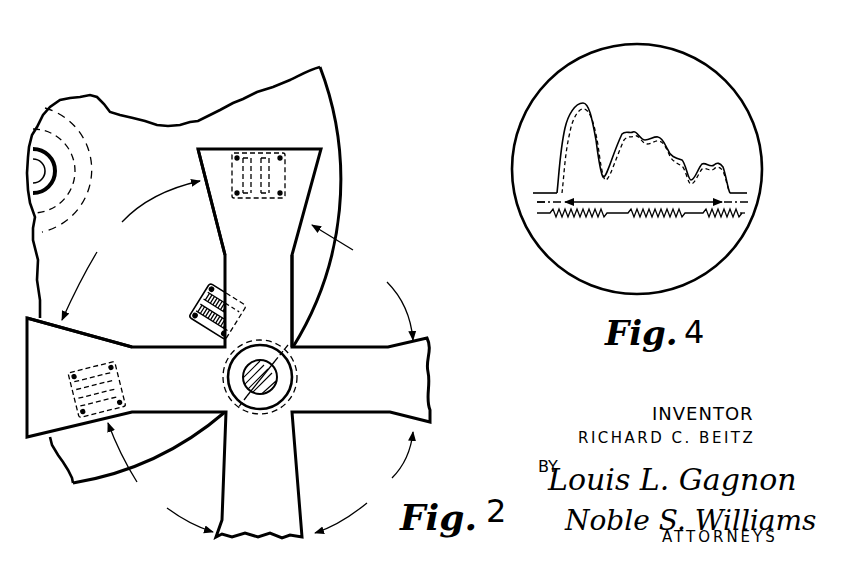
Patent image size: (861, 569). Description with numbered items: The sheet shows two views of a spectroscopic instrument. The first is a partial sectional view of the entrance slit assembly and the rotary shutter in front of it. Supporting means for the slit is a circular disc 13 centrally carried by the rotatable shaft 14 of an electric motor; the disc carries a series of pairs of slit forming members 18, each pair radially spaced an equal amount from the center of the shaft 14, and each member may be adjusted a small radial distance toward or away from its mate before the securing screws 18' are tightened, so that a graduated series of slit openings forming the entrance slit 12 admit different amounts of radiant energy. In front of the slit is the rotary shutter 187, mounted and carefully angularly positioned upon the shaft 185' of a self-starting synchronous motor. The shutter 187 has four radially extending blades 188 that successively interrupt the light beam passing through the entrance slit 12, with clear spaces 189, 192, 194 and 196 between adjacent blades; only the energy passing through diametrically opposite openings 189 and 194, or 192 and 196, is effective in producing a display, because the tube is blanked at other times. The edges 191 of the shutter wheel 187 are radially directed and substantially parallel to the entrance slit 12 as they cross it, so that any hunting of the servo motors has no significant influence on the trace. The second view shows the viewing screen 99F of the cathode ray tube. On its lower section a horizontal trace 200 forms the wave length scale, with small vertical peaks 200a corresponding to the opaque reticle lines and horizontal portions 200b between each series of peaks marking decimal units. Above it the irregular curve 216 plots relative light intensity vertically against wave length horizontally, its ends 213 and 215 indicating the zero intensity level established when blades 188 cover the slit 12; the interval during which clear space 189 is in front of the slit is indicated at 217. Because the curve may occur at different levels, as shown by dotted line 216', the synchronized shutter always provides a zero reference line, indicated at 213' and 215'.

In FIG. 2, the entrance slit 12 is at (250, 165).
In FIG. 2, the circular disc 13 is at (322, 128).
In FIG. 2, the rotatable shaft 14 is at (36, 170).
In FIG. 2, the slit forming members 18 is at (217, 311).
In FIG. 2, the securing screws 18' is at (196, 279).
In FIG. 2, the motor shaft 185' is at (278, 386).
In FIG. 2, the rotary shutter 187 is at (273, 220).
In FIG. 2, the shutter blades 188 is at (297, 157).
In FIG. 2, the clear space 189 is at (131, 250).
In FIG. 2, the edges 191 is at (210, 212).
In FIG. 2, the clear space 192 is at (160, 477).
In FIG. 2, the clear space 194 is at (364, 482).
In FIG. 2, the clear space 196 is at (362, 282).
In FIG. 4, the viewing screen 99F is at (695, 72).
In FIG. 4, the wave length scale trace 200 is at (545, 213).
In FIG. 4, the vertical peaks 200a is at (572, 214).
In FIG. 4, the horizontal portions 200b is at (627, 214).
In FIG. 4, the zero intensity end 213 is at (505, 179).
In FIG. 4, the zero reference line 213' is at (502, 209).
In FIG. 4, the zero intensity end 215 is at (766, 178).
In FIG. 4, the zero reference line 215' is at (775, 216).
In FIG. 4, the irregular curve 216 is at (643, 147).
In FIG. 4, the dotted line 216' is at (646, 151).
In FIG. 4, the transmission interval 217 is at (643, 194).